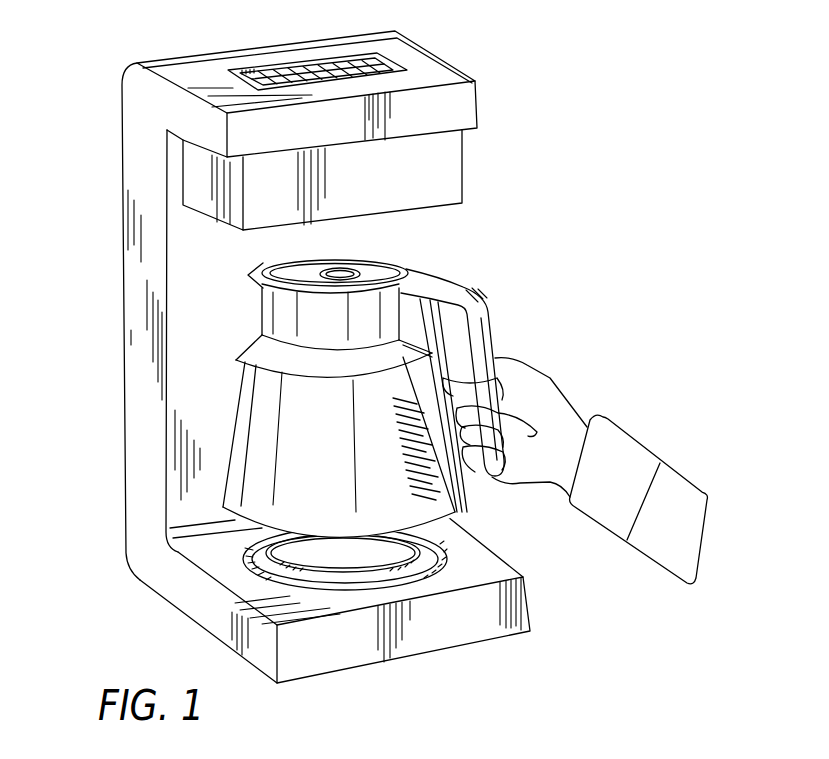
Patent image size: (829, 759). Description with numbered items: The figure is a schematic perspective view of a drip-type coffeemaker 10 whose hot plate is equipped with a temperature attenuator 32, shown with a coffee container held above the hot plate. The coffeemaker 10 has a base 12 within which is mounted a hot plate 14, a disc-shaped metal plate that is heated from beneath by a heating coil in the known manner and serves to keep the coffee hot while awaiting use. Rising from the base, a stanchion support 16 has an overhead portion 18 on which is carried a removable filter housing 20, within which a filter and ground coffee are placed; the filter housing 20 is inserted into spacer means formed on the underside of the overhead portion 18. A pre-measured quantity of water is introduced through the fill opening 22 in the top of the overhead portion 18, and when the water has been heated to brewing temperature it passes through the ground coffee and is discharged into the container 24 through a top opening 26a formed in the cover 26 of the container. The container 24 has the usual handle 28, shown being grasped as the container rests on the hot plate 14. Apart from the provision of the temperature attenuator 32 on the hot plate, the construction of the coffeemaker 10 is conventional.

The drip-type coffeemaker 10 is at (304, 344).
The base 12 is at (490, 565).
The hot plate 14 is at (442, 557).
The stanchion support 16 is at (193, 310).
The overhead portion 18 is at (418, 65).
The removable filter housing 20 is at (441, 169).
The fill opening 22 is at (301, 75).
The container 24 is at (267, 443).
The cover 26 is at (377, 258).
The top opening 26a is at (353, 263).
The handle 28 is at (483, 306).
The temperature attenuator 32 is at (278, 565).